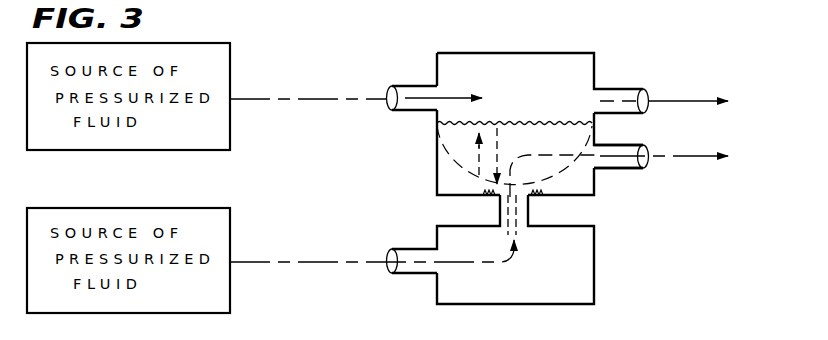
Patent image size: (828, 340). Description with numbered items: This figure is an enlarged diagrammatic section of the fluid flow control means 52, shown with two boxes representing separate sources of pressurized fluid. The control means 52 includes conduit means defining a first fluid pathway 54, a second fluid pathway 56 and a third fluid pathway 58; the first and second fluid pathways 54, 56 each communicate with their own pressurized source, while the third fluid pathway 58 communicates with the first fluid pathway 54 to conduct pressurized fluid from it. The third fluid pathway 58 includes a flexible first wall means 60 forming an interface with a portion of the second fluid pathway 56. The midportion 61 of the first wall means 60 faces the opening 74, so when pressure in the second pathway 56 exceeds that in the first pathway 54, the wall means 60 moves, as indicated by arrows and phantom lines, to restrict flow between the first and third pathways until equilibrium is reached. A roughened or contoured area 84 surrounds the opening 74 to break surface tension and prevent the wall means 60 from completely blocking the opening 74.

The control means 52 is at (614, 55).
The first fluid pathway 54 is at (420, 283).
The second fluid pathway 56 is at (426, 68).
The third fluid pathway 58 is at (606, 174).
The first wall means 60 is at (543, 121).
The midportion 61 is at (507, 121).
The opening 74 is at (529, 206).
The area 84 is at (476, 192).